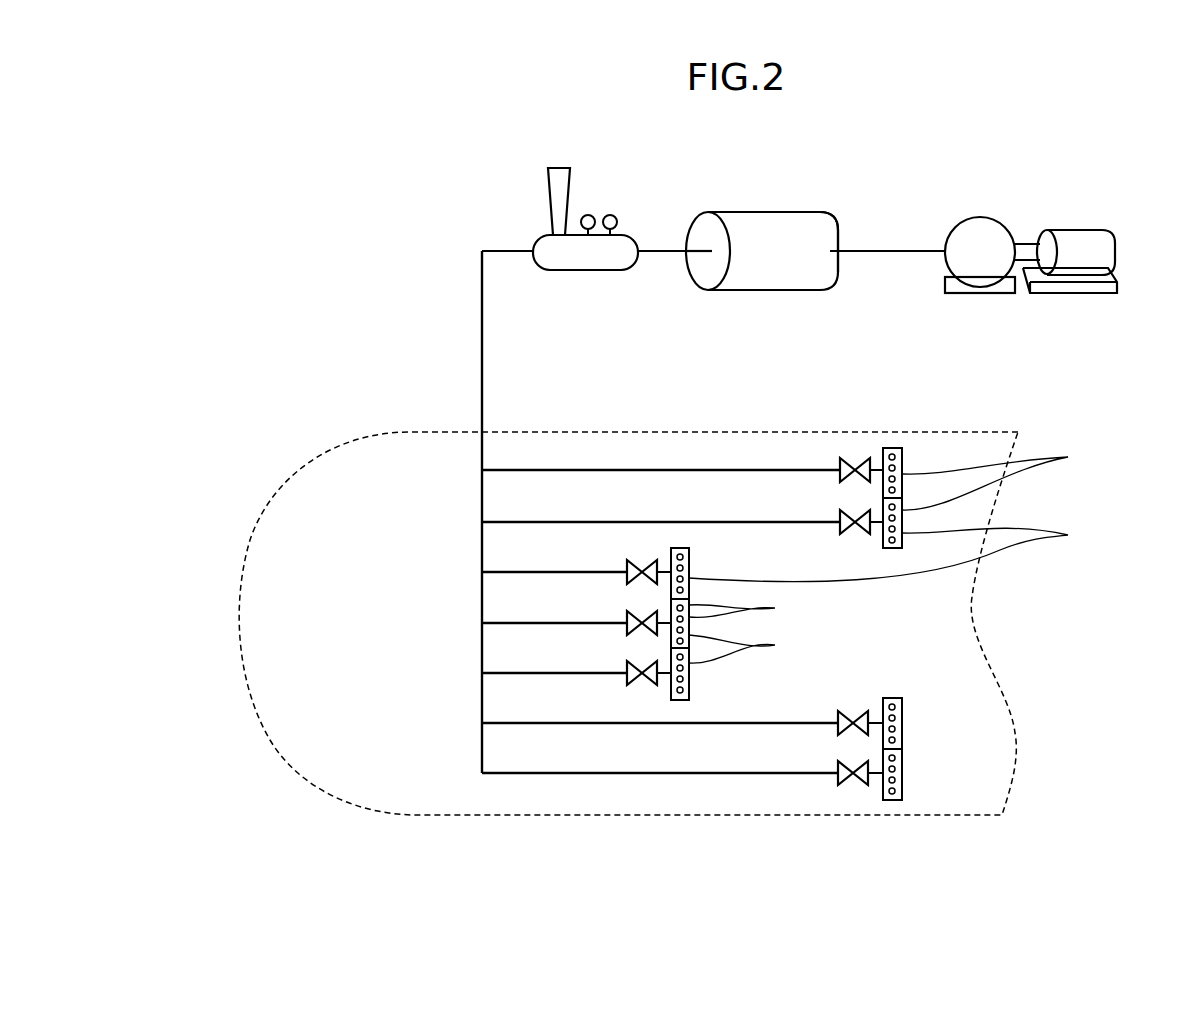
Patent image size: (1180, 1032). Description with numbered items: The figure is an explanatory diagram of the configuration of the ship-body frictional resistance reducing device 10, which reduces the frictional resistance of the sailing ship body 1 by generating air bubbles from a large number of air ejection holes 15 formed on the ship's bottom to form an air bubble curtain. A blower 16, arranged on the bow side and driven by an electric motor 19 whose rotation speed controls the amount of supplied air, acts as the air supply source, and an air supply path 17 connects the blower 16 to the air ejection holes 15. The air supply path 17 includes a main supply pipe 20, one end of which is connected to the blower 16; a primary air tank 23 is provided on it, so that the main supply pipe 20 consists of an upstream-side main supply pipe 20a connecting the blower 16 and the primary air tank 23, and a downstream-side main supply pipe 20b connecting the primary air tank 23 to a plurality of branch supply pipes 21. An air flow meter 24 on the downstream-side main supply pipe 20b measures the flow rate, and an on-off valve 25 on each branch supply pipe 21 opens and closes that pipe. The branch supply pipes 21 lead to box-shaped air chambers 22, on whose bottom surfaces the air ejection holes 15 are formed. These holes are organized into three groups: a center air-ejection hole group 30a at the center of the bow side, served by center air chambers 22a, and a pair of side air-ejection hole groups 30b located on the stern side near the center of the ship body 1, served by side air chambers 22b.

The ship body 1 is at (353, 448).
The ship-body frictional resistance reducing device 10 is at (1068, 182).
The air ejection holes 15 is at (747, 609).
The blower 16 is at (982, 217).
The air supply path 17 is at (752, 203).
The electric motor 19 is at (1115, 246).
The main supply pipe 20 is at (813, 358).
The upstream-side main supply pipe 20a is at (857, 253).
The downstream-side main supply pipe 20b is at (652, 253).
The branch supply pipes 21 is at (507, 523).
The air chambers 22 is at (893, 554).
The center air chambers 22a is at (753, 648).
The side air chambers 22b is at (1008, 479).
The primary air tank 23 is at (826, 215).
The air flow meter 24 is at (535, 240).
The on-off valve 25 is at (858, 735).
The center air-ejection hole group 30a is at (692, 691).
The side air-ejection hole groups 30b is at (901, 447).